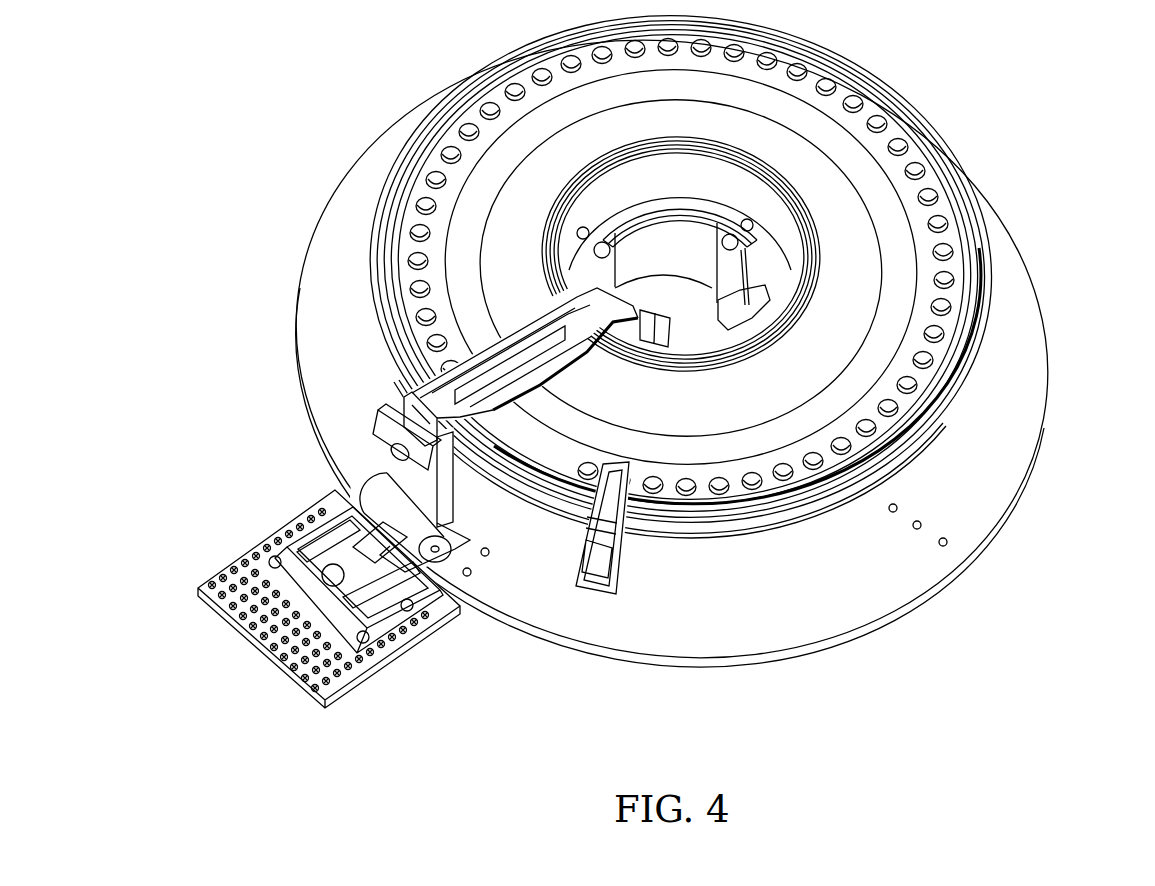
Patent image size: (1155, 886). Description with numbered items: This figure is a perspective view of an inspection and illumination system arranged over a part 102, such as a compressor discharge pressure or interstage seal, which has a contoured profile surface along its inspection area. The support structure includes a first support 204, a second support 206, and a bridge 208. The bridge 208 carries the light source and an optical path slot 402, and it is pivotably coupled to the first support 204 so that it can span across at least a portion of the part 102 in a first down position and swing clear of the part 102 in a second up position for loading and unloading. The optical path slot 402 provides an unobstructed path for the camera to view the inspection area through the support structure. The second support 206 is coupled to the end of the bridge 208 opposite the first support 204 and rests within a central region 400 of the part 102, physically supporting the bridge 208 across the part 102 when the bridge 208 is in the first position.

The part 102 is at (957, 232).
The first support 204 is at (383, 438).
The second support 206 is at (698, 330).
The bridge 208 is at (424, 286).
The central region 400 is at (730, 266).
The optical path slot 402 is at (518, 348).